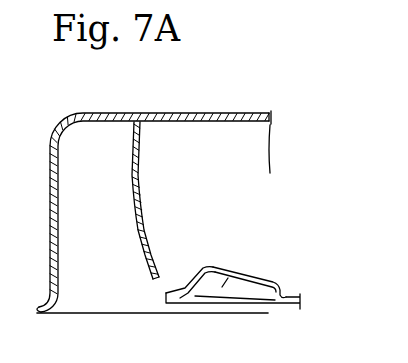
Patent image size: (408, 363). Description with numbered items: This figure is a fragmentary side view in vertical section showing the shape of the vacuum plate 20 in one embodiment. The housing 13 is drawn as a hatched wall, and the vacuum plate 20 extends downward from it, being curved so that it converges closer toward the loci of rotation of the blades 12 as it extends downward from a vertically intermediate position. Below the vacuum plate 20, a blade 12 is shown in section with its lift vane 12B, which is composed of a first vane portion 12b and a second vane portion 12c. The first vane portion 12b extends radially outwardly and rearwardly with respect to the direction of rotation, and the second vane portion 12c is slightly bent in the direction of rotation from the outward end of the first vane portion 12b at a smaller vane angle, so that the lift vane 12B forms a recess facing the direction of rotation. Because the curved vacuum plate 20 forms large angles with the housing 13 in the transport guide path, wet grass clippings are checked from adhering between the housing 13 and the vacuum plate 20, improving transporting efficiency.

The blade 12 is at (260, 229).
The lift vane 12B is at (225, 223).
The first vane portion 12b is at (244, 270).
The second vane portion 12c is at (203, 264).
The housing 13 is at (212, 112).
The vacuum plate 20 is at (130, 177).